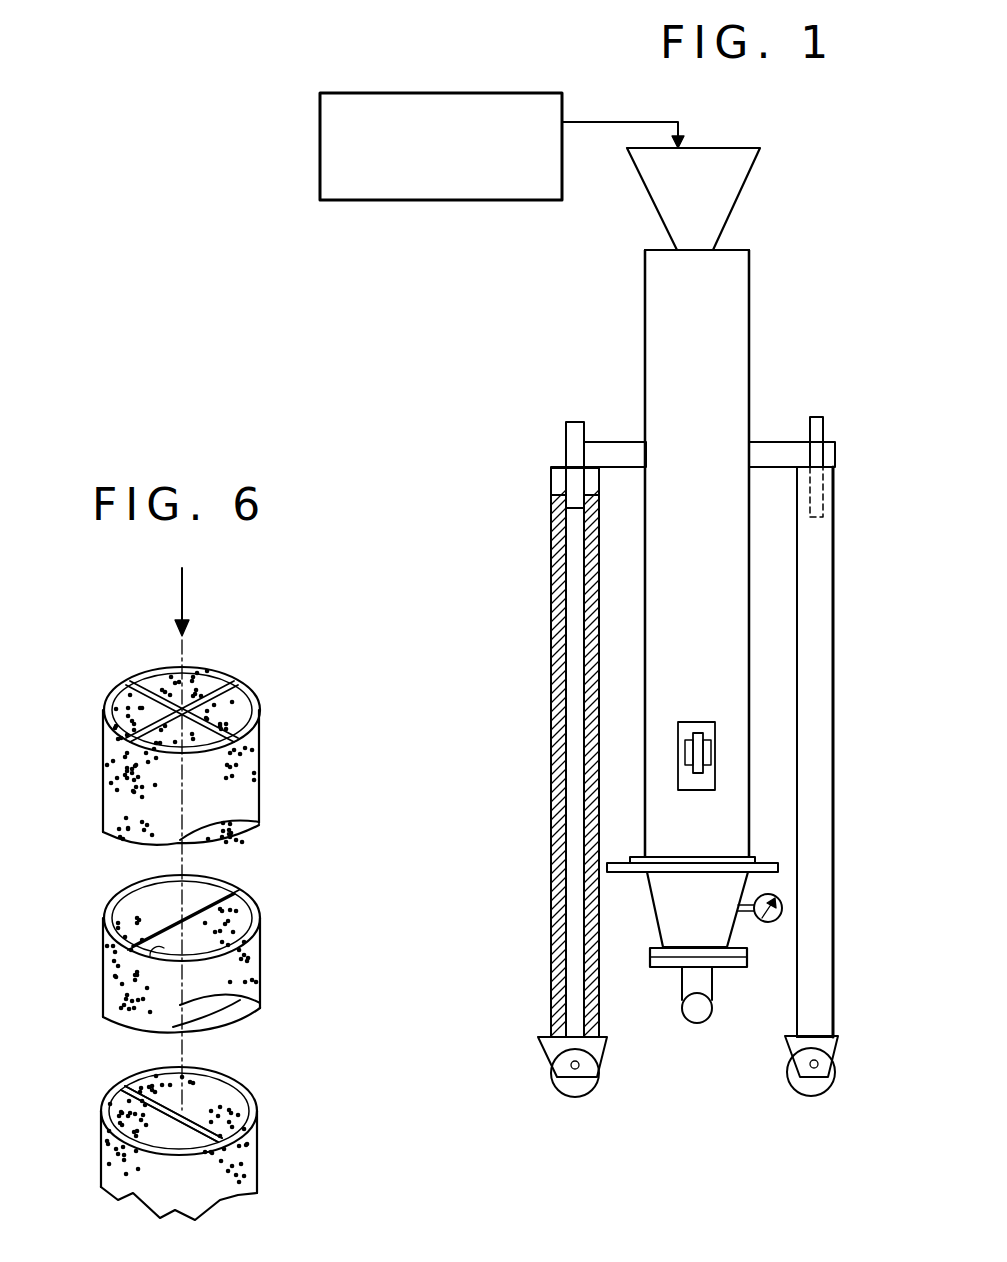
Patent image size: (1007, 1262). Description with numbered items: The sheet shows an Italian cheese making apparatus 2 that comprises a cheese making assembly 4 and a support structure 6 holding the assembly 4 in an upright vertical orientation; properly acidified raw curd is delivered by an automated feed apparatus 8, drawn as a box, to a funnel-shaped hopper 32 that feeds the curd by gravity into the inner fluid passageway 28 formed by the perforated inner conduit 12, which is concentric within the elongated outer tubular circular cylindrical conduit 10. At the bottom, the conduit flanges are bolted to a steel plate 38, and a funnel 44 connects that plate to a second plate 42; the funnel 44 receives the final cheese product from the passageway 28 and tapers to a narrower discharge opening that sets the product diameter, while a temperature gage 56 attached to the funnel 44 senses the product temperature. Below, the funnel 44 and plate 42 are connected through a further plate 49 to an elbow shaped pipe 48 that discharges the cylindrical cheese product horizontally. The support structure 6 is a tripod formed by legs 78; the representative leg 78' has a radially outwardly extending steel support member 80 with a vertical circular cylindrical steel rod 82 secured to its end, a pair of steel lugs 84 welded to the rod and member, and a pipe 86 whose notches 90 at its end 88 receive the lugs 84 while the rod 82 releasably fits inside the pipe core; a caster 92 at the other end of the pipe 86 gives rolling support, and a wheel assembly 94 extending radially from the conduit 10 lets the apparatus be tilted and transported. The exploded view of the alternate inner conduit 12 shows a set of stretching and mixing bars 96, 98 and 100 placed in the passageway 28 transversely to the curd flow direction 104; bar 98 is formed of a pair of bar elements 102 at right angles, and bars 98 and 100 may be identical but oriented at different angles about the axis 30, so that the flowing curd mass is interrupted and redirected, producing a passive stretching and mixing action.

In FIG. 1, the Italian cheese making apparatus 2 is at (778, 286).
In FIG. 1, the cheese making assembly 4 is at (614, 298).
In FIG. 1, the support structure 6 is at (845, 609).
In FIG. 1, the automated feed apparatus 8 is at (499, 93).
In FIG. 1, the outer tubular circular cylindrical conduit 10 is at (686, 631).
In FIG. 6, the inner perforated tubular circular cylindrical conduit 12 is at (262, 815).
In FIG. 6, the inner fluid passageway 28 is at (142, 1078).
In FIG. 6, the axis 30 is at (260, 995).
In FIG. 1, the hopper 32 is at (752, 185).
In FIG. 1, the steel plate 38 is at (703, 863).
In FIG. 1, the second plate 42 is at (737, 947).
In FIG. 1, the funnel 44 is at (666, 905).
In FIG. 1, the elbow shaped pipe 48 is at (686, 1018).
In FIG. 1, the further plate 49 is at (737, 968).
In FIG. 1, the temperature gage 56 is at (783, 904).
In FIG. 1, the legs 78 is at (852, 752).
In FIG. 1, the representative leg 78' is at (538, 752).
In FIG. 1, the steel support member 80 is at (618, 440).
In FIG. 1, the vertical circular cylindrical steel rod 82 is at (566, 447).
In FIG. 1, the steel lugs 84 is at (551, 480).
In FIG. 1, the pipe 86 is at (551, 805).
In FIG. 1, the end 88 is at (551, 517).
In FIG. 1, the notches 90 is at (599, 490).
In FIG. 1, the caster 92 is at (555, 1052).
In FIG. 1, the wheel assembly 94 is at (709, 722).
In FIG. 6, the stretching and mixing bar 96 is at (161, 670).
In FIG. 6, the stretching and mixing bar 98 is at (150, 957).
In FIG. 6, the stretching and mixing bar 100 is at (115, 1095).
In FIG. 6, the bar elements 102 is at (207, 683).
In FIG. 6, the flow direction 104 is at (183, 586).